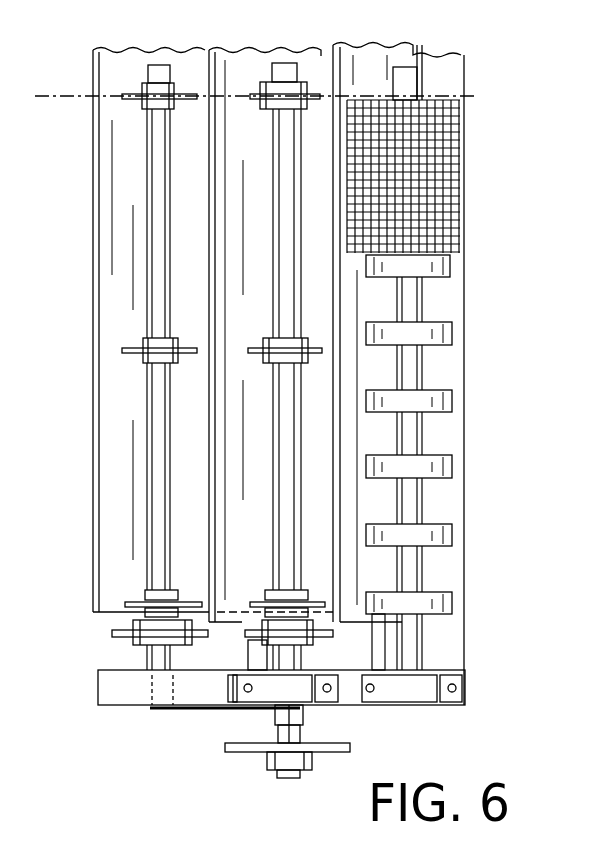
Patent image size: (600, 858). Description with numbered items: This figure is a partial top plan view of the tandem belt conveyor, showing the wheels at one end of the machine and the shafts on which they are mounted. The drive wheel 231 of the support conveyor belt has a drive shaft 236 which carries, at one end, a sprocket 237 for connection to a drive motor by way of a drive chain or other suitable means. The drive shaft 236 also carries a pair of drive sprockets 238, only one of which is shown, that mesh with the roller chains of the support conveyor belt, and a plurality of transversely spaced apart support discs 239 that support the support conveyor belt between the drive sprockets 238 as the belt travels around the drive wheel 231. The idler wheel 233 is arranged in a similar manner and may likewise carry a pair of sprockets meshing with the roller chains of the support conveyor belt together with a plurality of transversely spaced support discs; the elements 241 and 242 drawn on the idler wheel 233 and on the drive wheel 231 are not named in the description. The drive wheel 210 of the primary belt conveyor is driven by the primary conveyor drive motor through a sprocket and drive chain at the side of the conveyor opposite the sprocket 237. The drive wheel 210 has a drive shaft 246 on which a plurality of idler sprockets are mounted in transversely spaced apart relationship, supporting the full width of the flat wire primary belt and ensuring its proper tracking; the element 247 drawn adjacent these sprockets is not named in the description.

The drive wheel 210 is at (452, 622).
The drive wheel 231 is at (259, 56).
The idler wheel 233 is at (130, 72).
The drive shaft 236 is at (303, 713).
The sprocket 237 is at (240, 752).
The drive sprockets 238 is at (243, 628).
The support discs 239 is at (260, 358).
The lower pulley 241 is at (122, 637).
The bearing collar 242 is at (133, 353).
The drive shaft 246 is at (425, 372).
The disc 247 is at (450, 472).